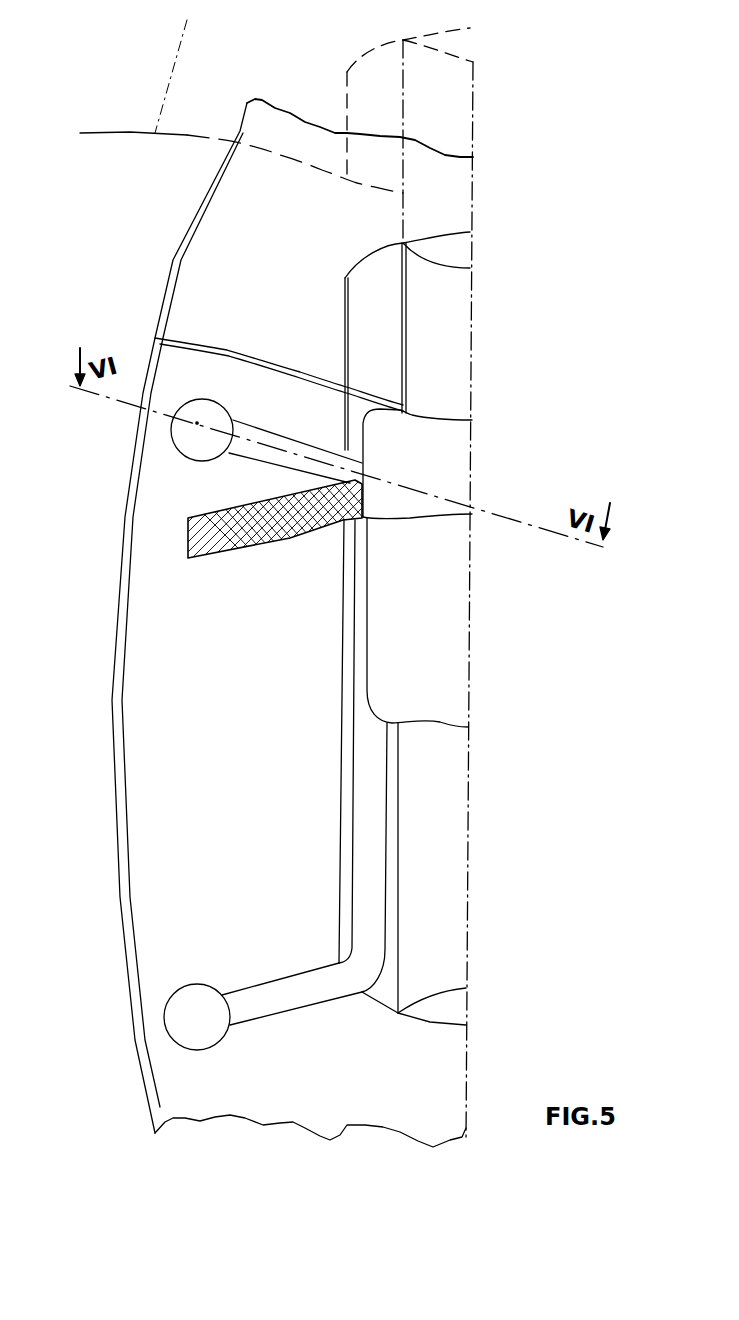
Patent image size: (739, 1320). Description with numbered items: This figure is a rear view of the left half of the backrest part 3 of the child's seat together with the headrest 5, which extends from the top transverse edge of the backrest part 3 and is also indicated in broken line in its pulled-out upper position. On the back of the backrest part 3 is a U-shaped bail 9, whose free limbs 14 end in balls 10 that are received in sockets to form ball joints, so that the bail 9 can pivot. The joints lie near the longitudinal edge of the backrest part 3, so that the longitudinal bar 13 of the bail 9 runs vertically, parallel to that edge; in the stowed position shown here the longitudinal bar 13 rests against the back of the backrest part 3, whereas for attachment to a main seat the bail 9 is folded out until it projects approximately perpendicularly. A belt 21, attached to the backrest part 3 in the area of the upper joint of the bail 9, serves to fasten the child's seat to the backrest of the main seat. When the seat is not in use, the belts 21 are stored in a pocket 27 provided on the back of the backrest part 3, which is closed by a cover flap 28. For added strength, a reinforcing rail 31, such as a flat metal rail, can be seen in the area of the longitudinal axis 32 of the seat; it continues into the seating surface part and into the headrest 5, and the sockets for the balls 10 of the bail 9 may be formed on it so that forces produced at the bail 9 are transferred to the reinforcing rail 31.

The backrest part 3 is at (143, 720).
The headrest 5 is at (187, 86).
The U-shaped bail 9 is at (386, 892).
The ball 10 is at (193, 407).
The longitudinal bar 13 is at (378, 792).
The free limb 14 is at (260, 447).
The belt 21 is at (188, 545).
The pocket 27 is at (445, 665).
The cover flap 28 is at (450, 432).
The reinforcing rail 31 is at (450, 308).
The longitudinal axis 32 is at (473, 189).